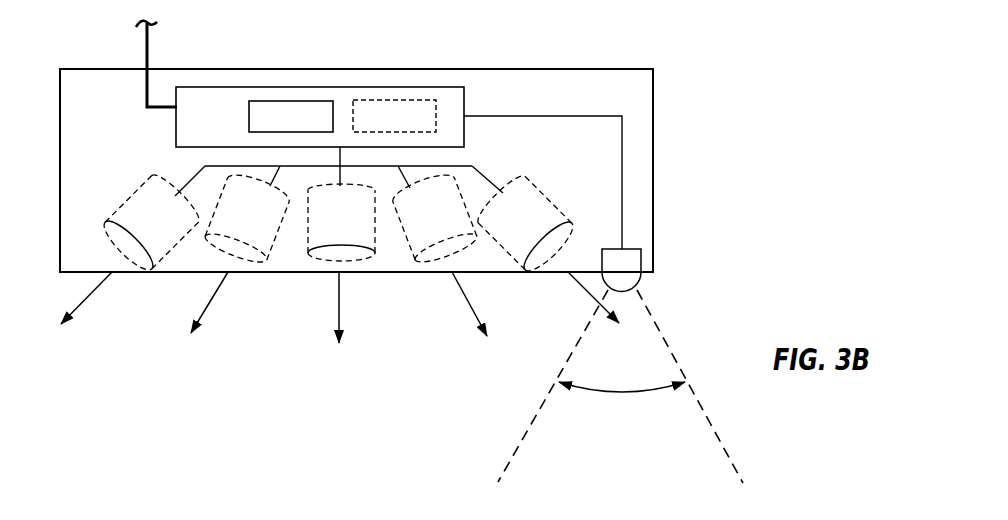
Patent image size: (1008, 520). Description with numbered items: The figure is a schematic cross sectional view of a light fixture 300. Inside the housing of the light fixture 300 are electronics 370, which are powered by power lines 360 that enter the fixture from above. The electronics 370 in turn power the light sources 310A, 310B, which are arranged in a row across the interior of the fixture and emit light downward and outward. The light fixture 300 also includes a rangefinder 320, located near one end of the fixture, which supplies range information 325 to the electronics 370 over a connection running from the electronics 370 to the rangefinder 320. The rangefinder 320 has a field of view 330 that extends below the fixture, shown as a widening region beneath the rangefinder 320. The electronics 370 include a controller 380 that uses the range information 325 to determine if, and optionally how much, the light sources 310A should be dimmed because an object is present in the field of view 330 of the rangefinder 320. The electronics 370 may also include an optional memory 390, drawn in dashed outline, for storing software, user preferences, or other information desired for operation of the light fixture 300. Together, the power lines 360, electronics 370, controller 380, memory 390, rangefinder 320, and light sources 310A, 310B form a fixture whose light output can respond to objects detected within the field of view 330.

The light fixture 300 is at (767, 114).
The light sources 310A is at (234, 218).
The light sources 310B is at (131, 229).
The rangefinder 320 is at (641, 282).
The range information 325 is at (622, 160).
The field of view 330 is at (618, 392).
The power lines 360 is at (147, 43).
The electronics 370 is at (203, 128).
The controller 380 is at (276, 128).
The memory 390 is at (380, 128).